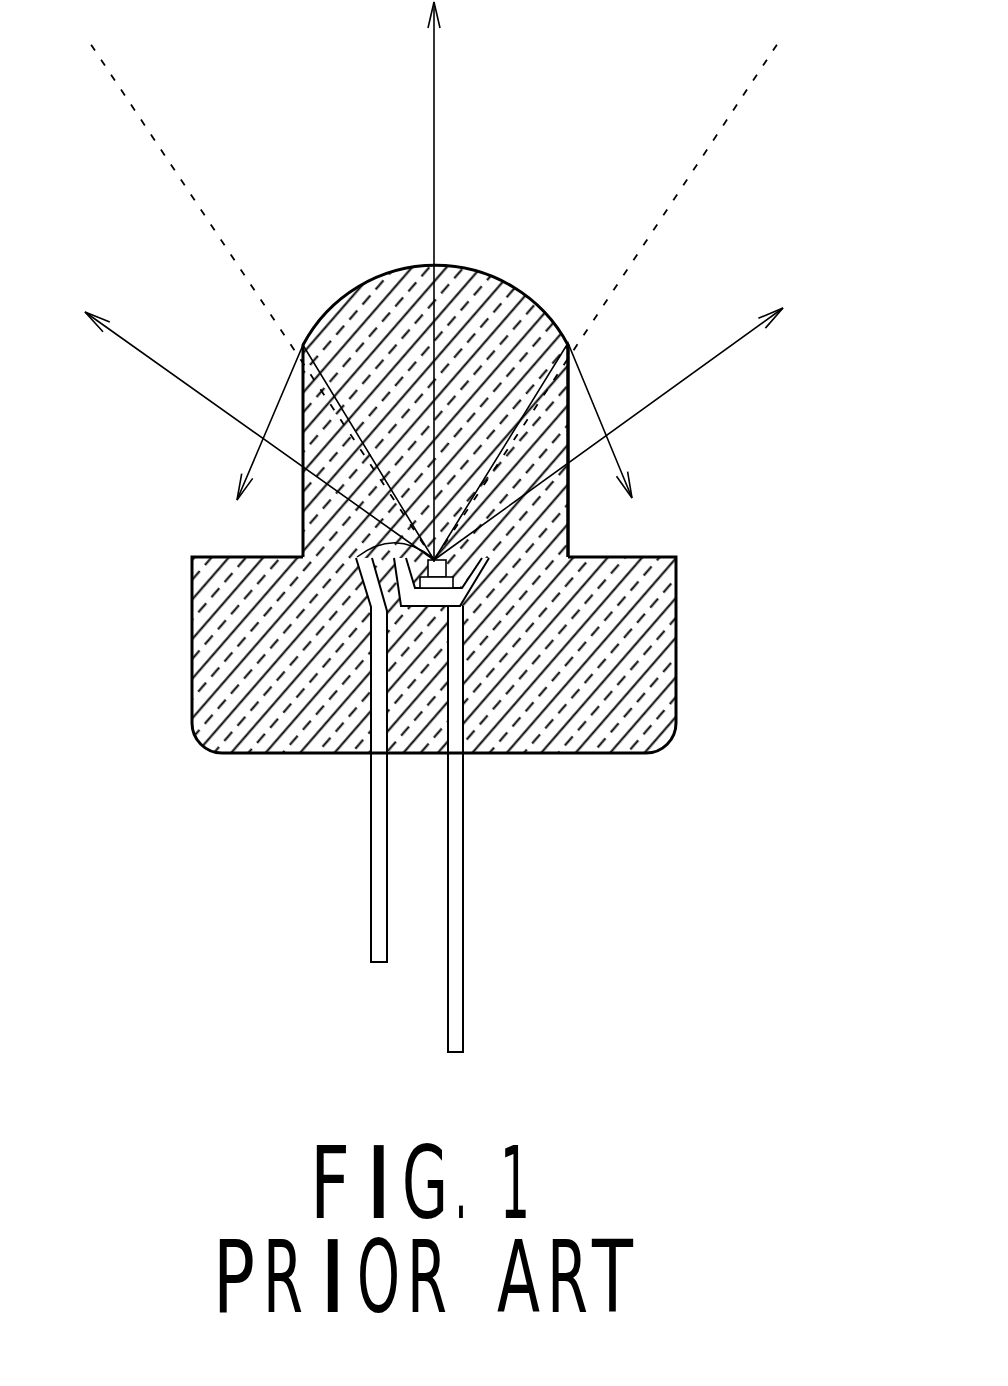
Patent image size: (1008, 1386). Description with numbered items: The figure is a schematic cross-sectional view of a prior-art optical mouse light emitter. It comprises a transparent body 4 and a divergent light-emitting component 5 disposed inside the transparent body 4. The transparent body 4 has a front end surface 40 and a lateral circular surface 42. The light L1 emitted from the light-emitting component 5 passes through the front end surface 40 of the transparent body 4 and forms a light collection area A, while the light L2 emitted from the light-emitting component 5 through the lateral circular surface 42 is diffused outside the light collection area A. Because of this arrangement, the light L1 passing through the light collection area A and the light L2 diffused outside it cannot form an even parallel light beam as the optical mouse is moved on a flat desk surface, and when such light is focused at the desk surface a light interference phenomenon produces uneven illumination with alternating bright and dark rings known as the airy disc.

The light L1 is at (434, 90).
The light collection area A is at (690, 125).
The front end surface 40 is at (525, 290).
The light L2 is at (700, 372).
The lateral circular surface 42 is at (568, 495).
The transparent body 4 is at (512, 530).
The divergent light-emitting component 5 is at (472, 566).